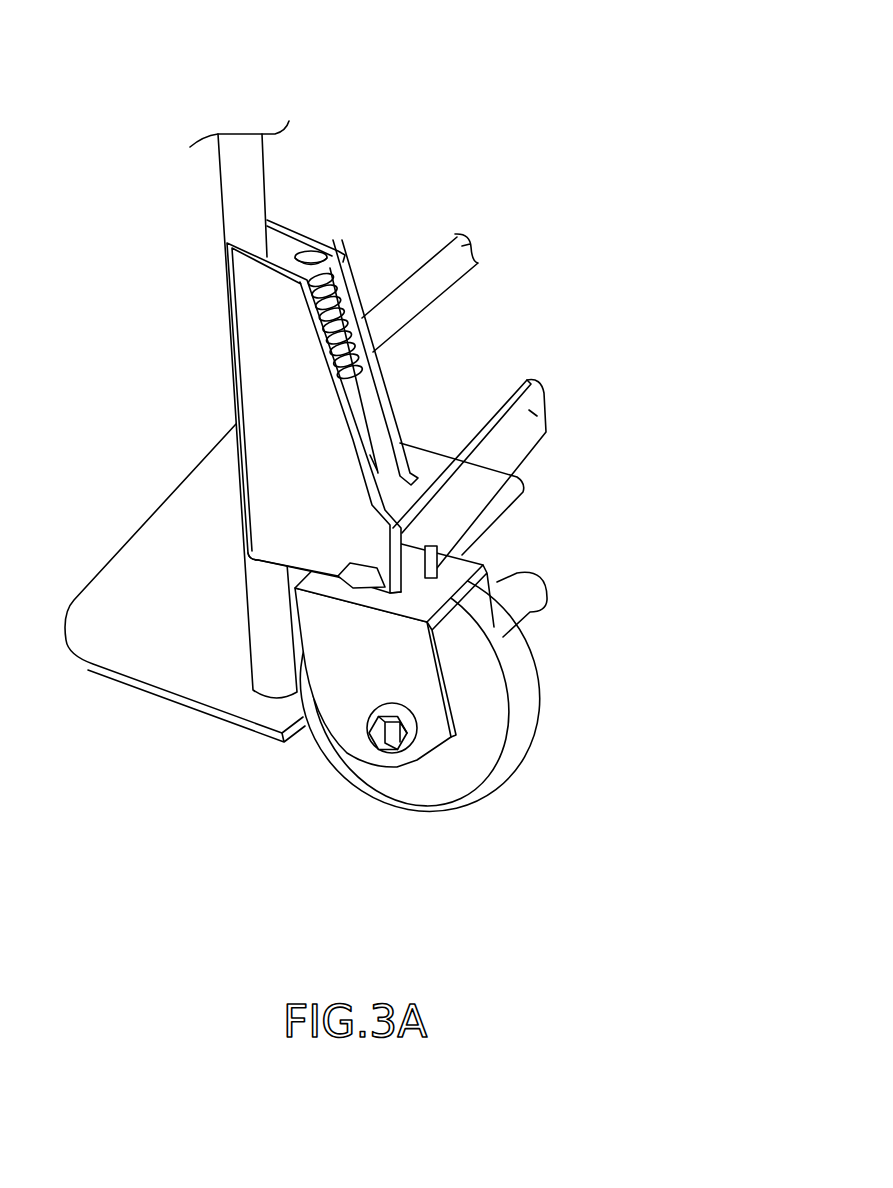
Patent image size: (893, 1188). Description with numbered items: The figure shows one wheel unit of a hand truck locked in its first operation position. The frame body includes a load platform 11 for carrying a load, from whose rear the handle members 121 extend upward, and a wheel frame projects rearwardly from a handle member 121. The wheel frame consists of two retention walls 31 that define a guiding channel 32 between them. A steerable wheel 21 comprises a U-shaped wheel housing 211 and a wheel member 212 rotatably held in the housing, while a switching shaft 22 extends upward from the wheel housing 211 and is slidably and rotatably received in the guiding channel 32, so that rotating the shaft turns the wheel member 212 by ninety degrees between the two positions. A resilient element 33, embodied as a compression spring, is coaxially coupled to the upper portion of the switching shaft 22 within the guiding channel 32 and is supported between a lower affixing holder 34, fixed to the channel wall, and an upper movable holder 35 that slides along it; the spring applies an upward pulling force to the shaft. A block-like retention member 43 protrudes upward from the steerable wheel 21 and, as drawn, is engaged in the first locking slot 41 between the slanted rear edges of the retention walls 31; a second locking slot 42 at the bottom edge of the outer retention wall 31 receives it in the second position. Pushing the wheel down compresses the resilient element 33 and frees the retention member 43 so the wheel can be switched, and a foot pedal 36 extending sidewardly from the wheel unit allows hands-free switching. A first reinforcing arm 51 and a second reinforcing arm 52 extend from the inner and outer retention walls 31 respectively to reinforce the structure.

The load platform 11 is at (147, 573).
The handle member 121 is at (233, 203).
The steerable wheel 21 is at (501, 755).
The wheel housing 211 is at (412, 678).
The wheel member 212 is at (520, 763).
The switching shaft 22 is at (370, 455).
The retention wall 31 is at (311, 300).
The guiding channel 32 is at (367, 350).
The resilient element 33 is at (346, 322).
The lower affixing holder 34 is at (358, 372).
The upper movable holder 35 is at (338, 243).
The foot pedal 36 is at (533, 605).
The first locking slot 41 is at (438, 545).
The second locking slot 42 is at (355, 582).
The retention member 43 is at (440, 566).
The first reinforcing arm 51 is at (470, 250).
The second reinforcing arm 52 is at (533, 413).